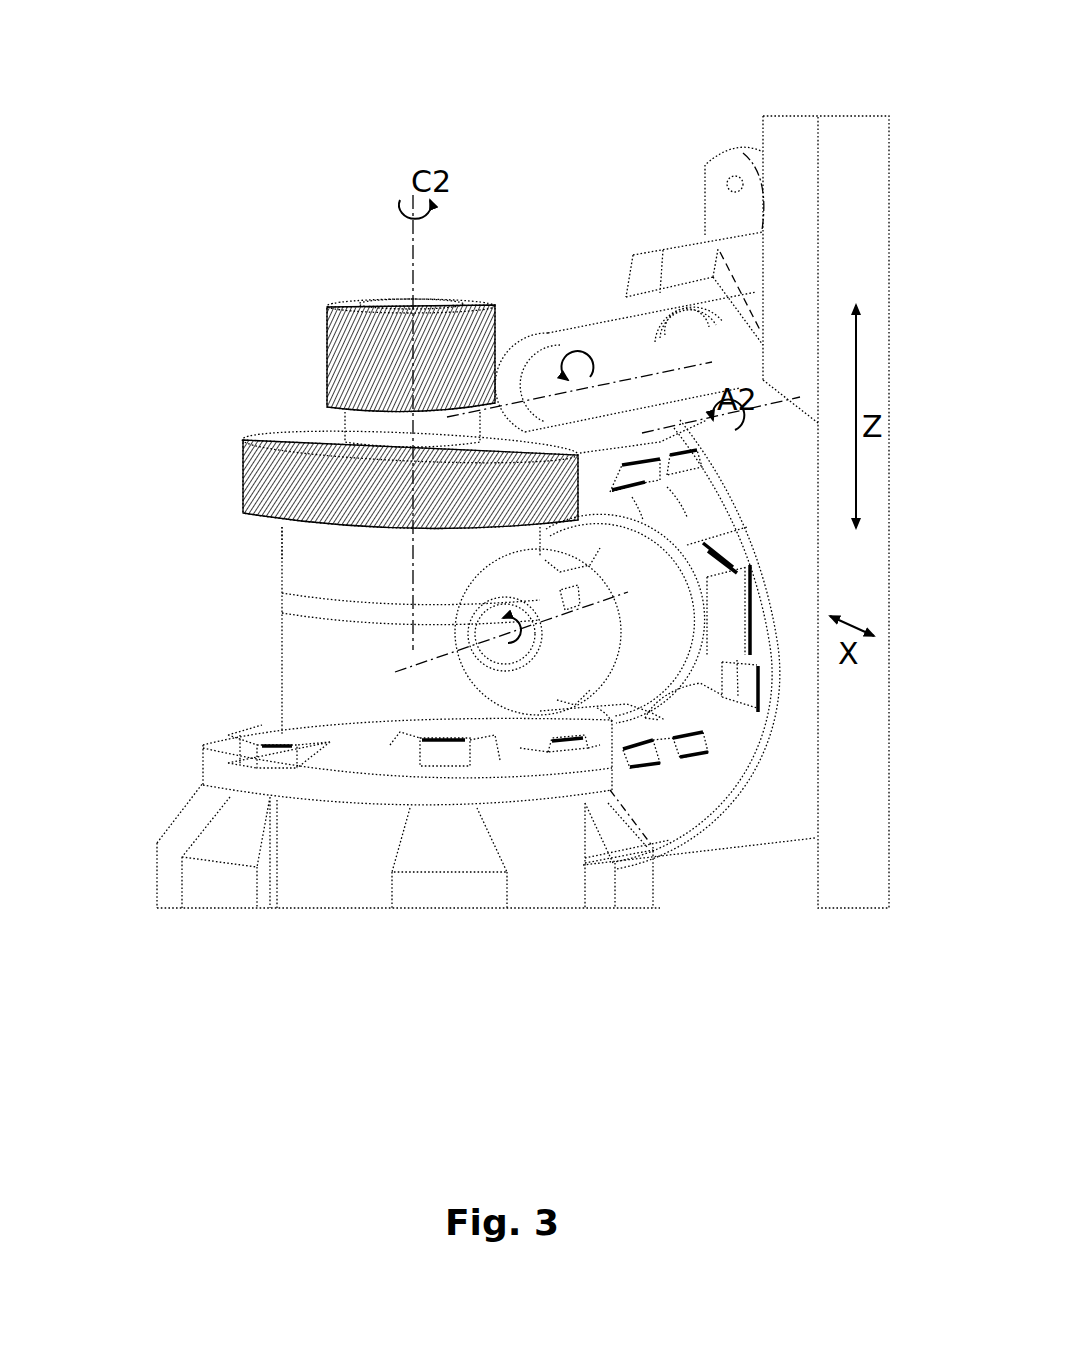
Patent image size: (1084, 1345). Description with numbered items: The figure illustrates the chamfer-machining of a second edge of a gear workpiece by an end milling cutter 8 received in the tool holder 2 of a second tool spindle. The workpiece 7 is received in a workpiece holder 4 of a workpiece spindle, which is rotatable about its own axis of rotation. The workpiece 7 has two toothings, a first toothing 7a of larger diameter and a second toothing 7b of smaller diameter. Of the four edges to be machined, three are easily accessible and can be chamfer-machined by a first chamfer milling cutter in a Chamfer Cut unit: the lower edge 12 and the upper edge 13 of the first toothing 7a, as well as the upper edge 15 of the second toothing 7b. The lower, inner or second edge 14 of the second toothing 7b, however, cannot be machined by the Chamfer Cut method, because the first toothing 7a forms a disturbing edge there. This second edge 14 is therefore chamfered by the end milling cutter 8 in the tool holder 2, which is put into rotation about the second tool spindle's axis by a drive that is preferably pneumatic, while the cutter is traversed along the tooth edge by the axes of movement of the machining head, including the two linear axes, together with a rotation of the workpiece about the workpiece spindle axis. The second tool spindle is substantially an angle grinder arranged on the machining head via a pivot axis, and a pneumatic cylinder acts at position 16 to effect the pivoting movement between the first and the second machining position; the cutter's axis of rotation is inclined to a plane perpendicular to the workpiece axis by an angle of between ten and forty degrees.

The tool holder 2 is at (497, 410).
The workpiece holder 4 is at (300, 690).
The workpiece 7 is at (317, 565).
The first toothing 7a is at (213, 475).
The second toothing 7b is at (275, 335).
The end milling cutter 8 is at (470, 415).
The lower edge 12 is at (248, 513).
The upper edge 13 is at (248, 437).
The second edge 14 is at (330, 400).
The upper edge 15 is at (330, 305).
The position 16 is at (732, 180).